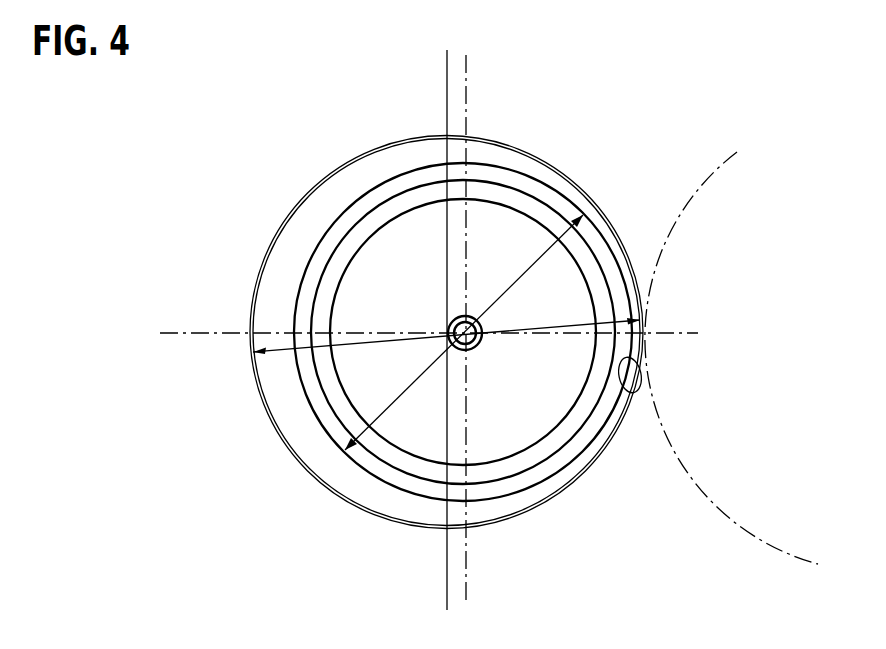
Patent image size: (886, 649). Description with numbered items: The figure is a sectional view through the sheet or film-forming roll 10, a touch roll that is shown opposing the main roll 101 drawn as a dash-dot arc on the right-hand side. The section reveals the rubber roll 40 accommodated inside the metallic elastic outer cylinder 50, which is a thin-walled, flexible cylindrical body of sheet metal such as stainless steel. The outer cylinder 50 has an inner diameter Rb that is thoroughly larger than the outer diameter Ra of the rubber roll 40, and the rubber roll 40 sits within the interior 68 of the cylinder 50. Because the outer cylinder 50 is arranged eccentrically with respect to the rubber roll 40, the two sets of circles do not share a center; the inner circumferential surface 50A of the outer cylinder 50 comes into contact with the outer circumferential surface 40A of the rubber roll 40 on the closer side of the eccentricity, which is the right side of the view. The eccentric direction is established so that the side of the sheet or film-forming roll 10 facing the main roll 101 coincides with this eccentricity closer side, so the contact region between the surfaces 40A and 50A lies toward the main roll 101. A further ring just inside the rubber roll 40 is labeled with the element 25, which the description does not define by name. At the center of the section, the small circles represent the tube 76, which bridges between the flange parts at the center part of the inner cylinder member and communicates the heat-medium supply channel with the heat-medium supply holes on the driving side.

The sheet or film-forming roll 10 is at (227, 182).
The inner ring portion 25 is at (600, 290).
The rubber roll 40 is at (598, 238).
The outer circumferential surface of the rubber roll 40A is at (643, 347).
The metallic elastic outer cylinder 50 is at (529, 156).
The inner circumferential surface of the outer cylinder 50A is at (635, 395).
The interior of the cylinder 68 is at (298, 437).
The tube 76 is at (480, 350).
The main roll 101 is at (720, 513).
The outer diameter of the rubber roll Ra is at (391, 408).
The inner diameter of the metallic elastic outer cylinder Rb is at (549, 326).